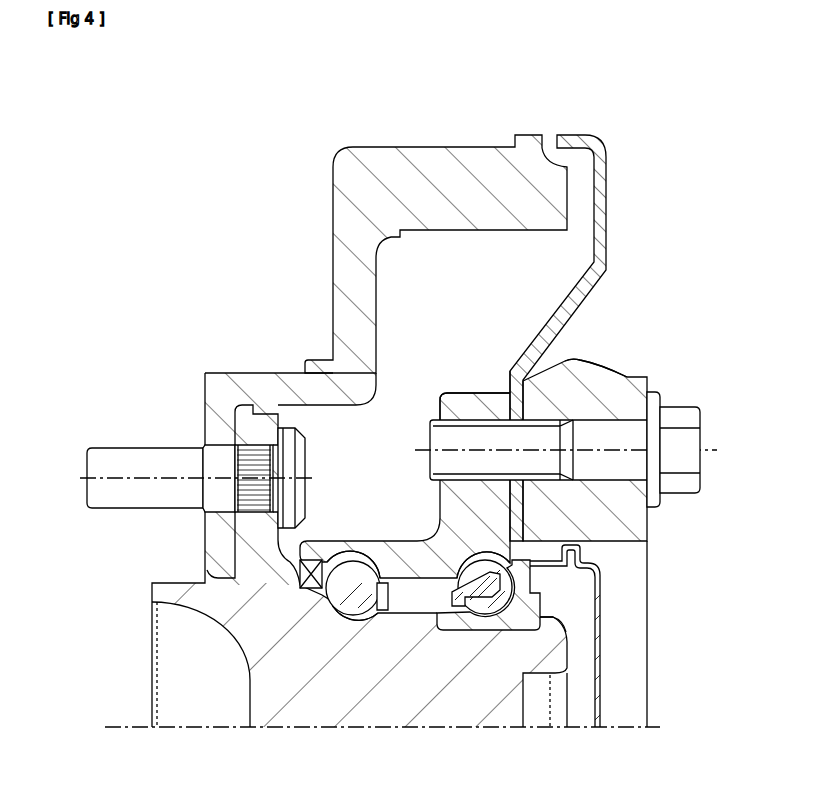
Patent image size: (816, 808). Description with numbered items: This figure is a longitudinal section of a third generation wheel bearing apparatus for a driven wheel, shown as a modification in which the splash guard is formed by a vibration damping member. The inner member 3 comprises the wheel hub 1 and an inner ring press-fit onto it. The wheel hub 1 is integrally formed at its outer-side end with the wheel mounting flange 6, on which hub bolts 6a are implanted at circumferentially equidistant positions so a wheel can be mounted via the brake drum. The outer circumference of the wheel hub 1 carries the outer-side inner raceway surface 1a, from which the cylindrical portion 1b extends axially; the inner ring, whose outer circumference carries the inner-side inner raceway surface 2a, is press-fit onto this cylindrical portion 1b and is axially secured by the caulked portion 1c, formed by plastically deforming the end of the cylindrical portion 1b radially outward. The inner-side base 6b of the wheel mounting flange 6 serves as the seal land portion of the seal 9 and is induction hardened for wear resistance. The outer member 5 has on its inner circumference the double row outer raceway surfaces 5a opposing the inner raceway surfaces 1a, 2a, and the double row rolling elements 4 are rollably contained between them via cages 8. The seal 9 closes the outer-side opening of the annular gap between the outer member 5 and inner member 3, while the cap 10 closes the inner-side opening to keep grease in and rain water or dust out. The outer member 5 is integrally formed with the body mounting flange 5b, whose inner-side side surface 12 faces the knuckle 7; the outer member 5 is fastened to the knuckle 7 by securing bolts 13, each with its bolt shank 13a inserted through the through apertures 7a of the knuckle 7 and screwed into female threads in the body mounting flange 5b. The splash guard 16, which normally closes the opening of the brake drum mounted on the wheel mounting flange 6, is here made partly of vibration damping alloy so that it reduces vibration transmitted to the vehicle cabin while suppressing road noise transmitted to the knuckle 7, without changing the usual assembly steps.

The wheel hub 1 is at (394, 550).
The inner raceway surface 1a is at (323, 594).
The cylindrical portion 1b is at (543, 640).
The caulked portion 1c is at (555, 623).
The inner raceway surface 2a is at (473, 617).
The inner member 3 is at (140, 683).
The rolling elements 4 is at (411, 592).
The outer member 5 is at (405, 486).
The outer raceway surfaces 5a is at (355, 580).
The body mounting flange 5b is at (440, 405).
The wheel mounting flange 6 is at (196, 436).
The hub bolts 6a is at (127, 460).
The inner-side base 6b is at (303, 570).
The knuckle 7 is at (585, 516).
The through apertures 7a is at (612, 437).
The cages 8 is at (480, 613).
The seal 9 is at (310, 548).
The cap 10 is at (606, 680).
The inner-side side surface 12 is at (511, 389).
The securing bolts 13 is at (682, 412).
The knuckle bolt 13a is at (447, 440).
The splash guard 16 is at (611, 241).